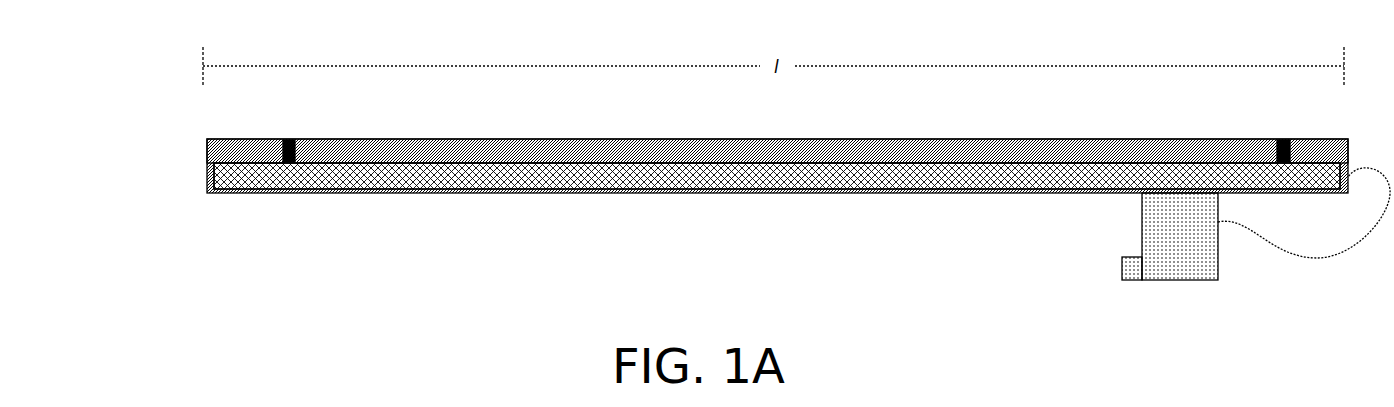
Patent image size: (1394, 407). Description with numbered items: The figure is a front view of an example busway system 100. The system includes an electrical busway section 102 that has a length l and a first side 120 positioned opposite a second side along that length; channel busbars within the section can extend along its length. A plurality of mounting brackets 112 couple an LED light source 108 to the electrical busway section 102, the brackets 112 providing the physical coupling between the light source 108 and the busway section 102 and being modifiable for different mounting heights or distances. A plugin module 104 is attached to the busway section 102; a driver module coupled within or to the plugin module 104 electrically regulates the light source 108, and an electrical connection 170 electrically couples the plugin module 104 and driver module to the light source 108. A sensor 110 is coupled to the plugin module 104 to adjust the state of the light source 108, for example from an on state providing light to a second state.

The busway system 100 is at (153, 96).
The electrical busway section 102 is at (463, 139).
The plugin module 104 is at (1160, 293).
The LED light source 108 is at (633, 194).
The sensor 110 is at (1106, 270).
The mounting bracket 112 is at (290, 129).
The first side 120 is at (204, 156).
The electrical connection 170 is at (1316, 271).